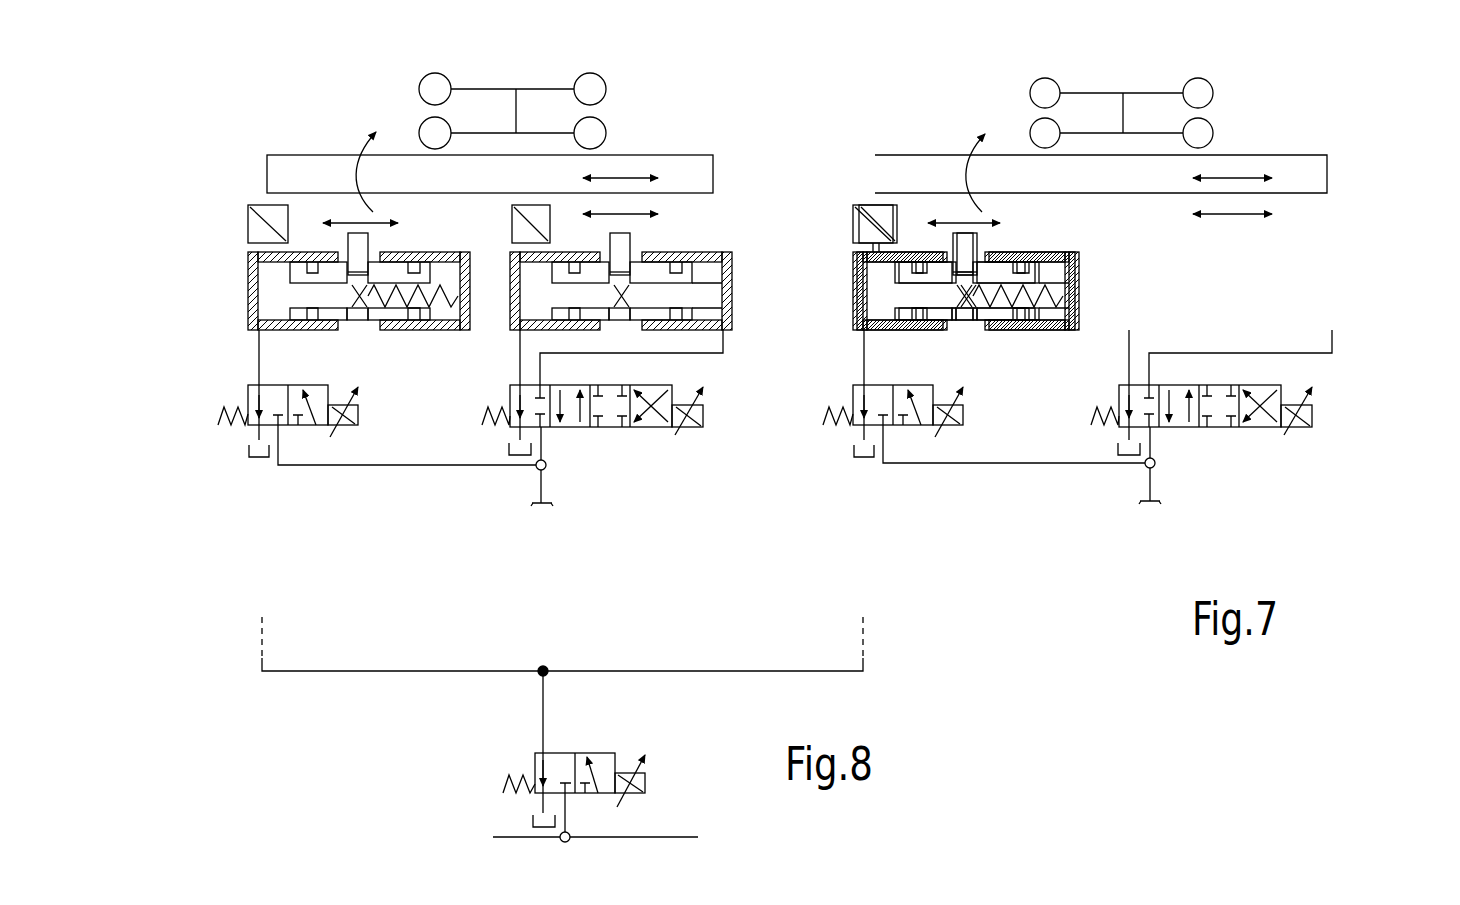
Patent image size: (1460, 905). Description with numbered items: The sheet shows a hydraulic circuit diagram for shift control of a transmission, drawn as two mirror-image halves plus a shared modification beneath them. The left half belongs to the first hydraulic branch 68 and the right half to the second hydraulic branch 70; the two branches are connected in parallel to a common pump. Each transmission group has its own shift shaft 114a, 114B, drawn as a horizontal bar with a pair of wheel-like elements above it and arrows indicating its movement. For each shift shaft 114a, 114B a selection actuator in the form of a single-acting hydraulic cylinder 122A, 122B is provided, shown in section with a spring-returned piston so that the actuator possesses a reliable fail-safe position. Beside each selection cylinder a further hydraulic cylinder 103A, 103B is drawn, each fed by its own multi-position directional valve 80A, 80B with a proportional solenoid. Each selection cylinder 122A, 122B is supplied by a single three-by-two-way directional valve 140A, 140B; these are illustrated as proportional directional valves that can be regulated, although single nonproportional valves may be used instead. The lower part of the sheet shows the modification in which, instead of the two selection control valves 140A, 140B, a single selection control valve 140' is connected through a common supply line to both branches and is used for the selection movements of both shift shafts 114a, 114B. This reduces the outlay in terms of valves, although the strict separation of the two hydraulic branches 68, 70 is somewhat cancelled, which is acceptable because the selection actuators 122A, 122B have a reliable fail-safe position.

In FIG. 7, the shift shaft 114a is at (288, 172).
In FIG. 7, the shift shaft 114B is at (908, 168).
In FIG. 7, the single-acting hydraulic cylinder 122A is at (250, 303).
In FIG. 7, the single-acting hydraulic cylinder 122B is at (855, 310).
In FIG. 7, the stop cylinder A 103A is at (725, 252).
In FIG. 7, the stop cylinder B 103B is at (1341, 253).
In FIG. 7, the 3/2-way directional valve 140A is at (252, 420).
In FIG. 7, the 3/2-way directional valve 140B is at (857, 422).
In FIG. 7, the directional valve A 80A is at (648, 428).
In FIG. 7, the directional valve B 80B is at (1257, 432).
In FIG. 7, the first hydraulic branch 68 is at (437, 492).
In FIG. 7, the second hydraulic branch 70 is at (1095, 500).
In FIG. 8, the selection control valve 140' is at (546, 756).